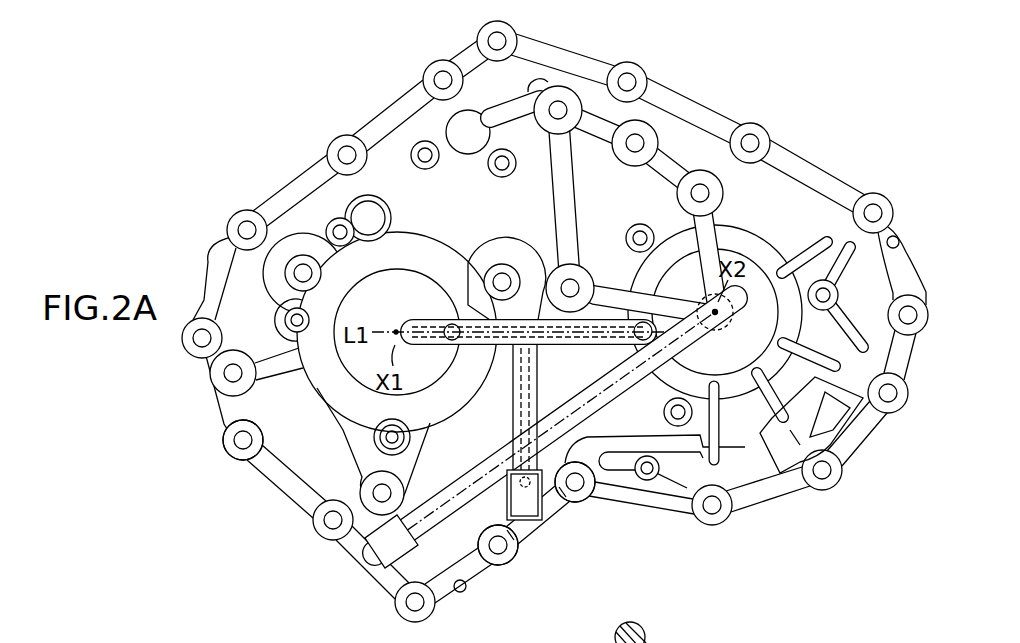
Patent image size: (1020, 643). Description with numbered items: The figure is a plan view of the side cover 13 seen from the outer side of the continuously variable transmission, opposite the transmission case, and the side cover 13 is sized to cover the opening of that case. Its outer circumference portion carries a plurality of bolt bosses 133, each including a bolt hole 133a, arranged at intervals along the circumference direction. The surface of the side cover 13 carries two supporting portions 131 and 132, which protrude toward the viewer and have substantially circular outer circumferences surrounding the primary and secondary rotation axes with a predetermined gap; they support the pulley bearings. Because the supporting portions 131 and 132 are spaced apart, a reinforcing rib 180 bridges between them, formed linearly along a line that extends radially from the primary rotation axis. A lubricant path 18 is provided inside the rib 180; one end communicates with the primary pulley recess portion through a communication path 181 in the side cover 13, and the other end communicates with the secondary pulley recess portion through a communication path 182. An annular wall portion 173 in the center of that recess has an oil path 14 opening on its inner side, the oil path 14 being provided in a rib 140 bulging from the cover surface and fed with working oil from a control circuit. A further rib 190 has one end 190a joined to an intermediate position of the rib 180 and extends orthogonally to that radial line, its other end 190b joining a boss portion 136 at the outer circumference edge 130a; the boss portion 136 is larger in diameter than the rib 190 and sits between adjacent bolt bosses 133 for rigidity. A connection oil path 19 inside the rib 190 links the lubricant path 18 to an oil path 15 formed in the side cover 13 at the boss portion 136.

The side cover 13 is at (307, 160).
The oil path 14 is at (515, 443).
The oil path 15 is at (546, 515).
The lubricant path 18 is at (531, 339).
The connection oil path 19 is at (510, 446).
The supporting portion 131 is at (440, 232).
The supporting portion 132 is at (769, 236).
The bolt boss 133 is at (592, 448).
The bolt hole 133a is at (225, 440).
The outer circumference edge 130a is at (538, 524).
The boss portion 136 is at (572, 508).
The rib 140 is at (368, 552).
The annular wall portion 173 is at (700, 333).
The rib 180 is at (588, 288).
The communication path 181 is at (442, 314).
The communication path 182 is at (672, 300).
The rib 190 is at (498, 302).
The one end of rib 190 190a is at (505, 262).
The other end of rib 190 190b is at (511, 447).